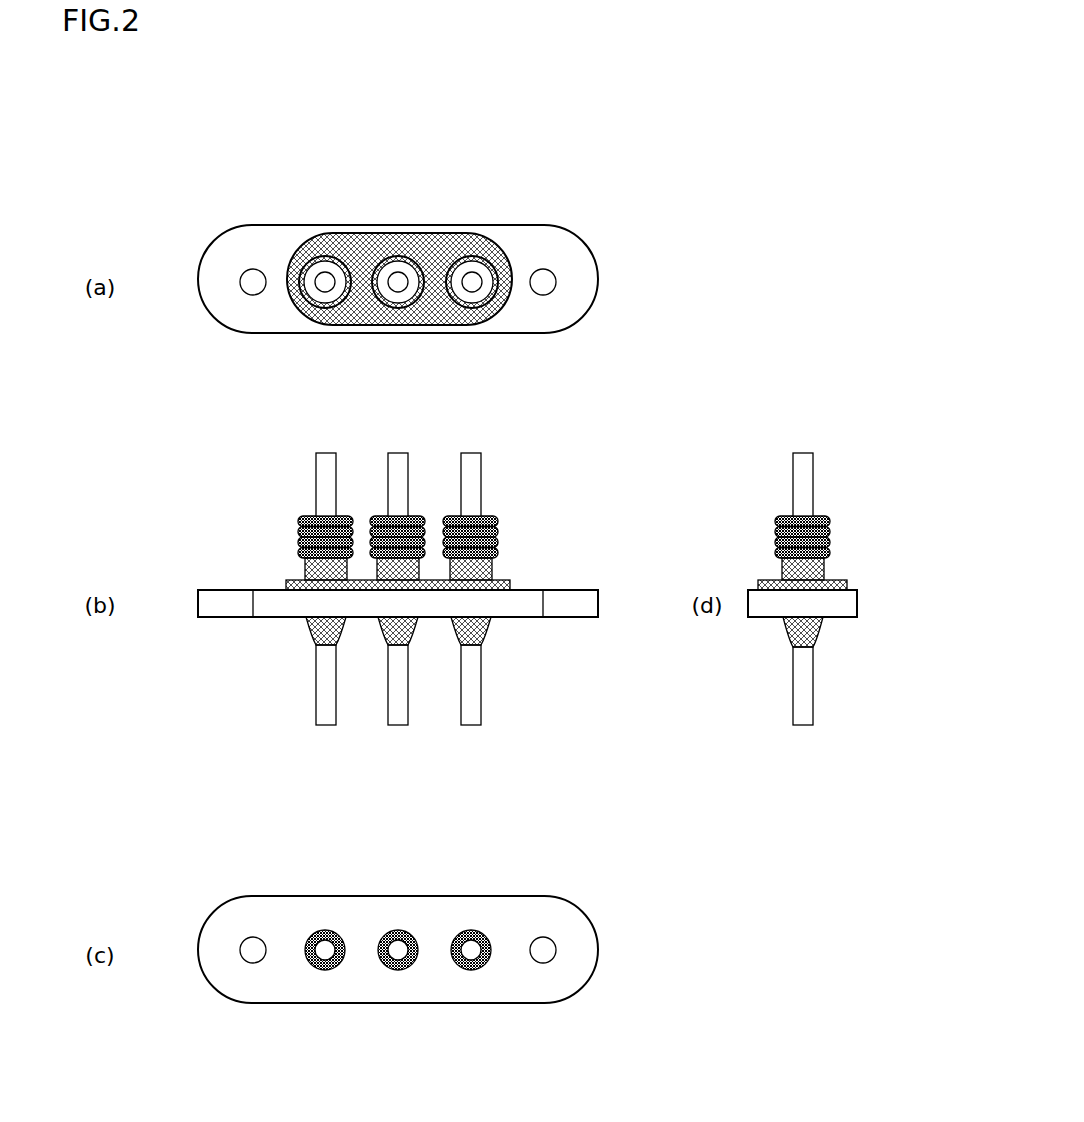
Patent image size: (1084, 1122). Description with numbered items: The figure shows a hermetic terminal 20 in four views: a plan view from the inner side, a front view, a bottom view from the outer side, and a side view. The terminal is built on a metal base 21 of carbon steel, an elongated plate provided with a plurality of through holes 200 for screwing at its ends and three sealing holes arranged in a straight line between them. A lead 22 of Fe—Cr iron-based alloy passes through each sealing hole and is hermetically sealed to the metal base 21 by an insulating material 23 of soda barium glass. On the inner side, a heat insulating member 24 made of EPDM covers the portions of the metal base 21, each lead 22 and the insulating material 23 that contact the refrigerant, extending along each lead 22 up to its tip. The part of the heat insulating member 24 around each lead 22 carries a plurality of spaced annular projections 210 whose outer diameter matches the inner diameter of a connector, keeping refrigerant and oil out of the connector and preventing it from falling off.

The hermetic terminal 20 is at (203, 205).
The metal base 21 is at (225, 283).
The lead 22 is at (325, 280).
The insulating material 23 is at (308, 630).
The heat insulating member 24 is at (372, 235).
The through hole 200 is at (252, 280).
The annular projection 210 is at (310, 324).